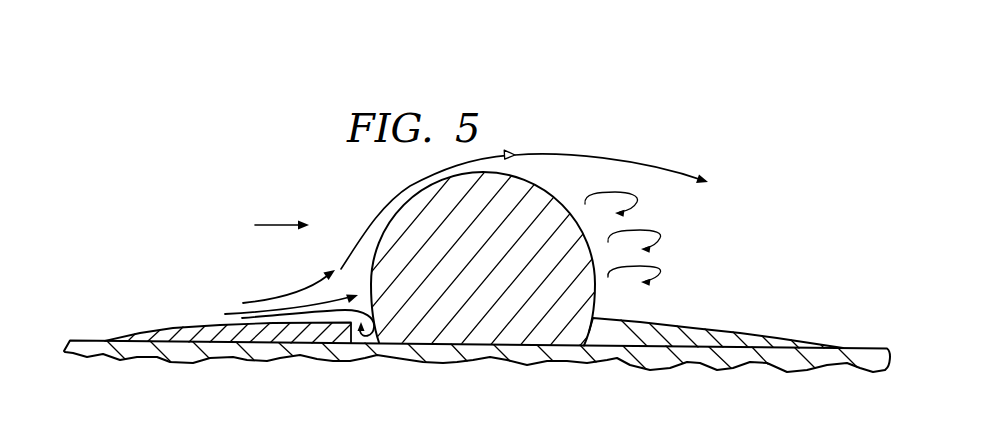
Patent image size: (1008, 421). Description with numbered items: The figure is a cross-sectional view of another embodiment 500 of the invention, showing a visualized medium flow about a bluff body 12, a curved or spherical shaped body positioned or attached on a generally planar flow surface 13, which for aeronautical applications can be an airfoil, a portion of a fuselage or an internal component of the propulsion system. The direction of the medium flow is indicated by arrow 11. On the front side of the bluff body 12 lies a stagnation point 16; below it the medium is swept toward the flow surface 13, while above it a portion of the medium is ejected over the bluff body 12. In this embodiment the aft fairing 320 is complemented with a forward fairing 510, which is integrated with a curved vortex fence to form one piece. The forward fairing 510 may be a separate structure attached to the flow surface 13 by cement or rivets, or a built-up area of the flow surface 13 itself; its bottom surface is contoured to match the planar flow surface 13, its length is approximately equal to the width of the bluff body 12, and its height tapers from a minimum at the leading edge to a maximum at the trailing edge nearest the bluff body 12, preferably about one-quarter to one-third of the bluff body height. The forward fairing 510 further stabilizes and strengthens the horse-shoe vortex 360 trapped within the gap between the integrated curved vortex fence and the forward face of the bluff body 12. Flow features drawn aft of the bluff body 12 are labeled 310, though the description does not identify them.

The embodiment 500 is at (306, 163).
The arrow 11 is at (275, 222).
The stagnation point 16 is at (371, 288).
The forward fairing 510 is at (180, 335).
The horse-shoe vortex 360 is at (383, 330).
The bluff body 12 is at (596, 288).
The vortices 310 is at (637, 201).
The aft fairing 320 is at (770, 340).
The flow surface 13 is at (865, 347).